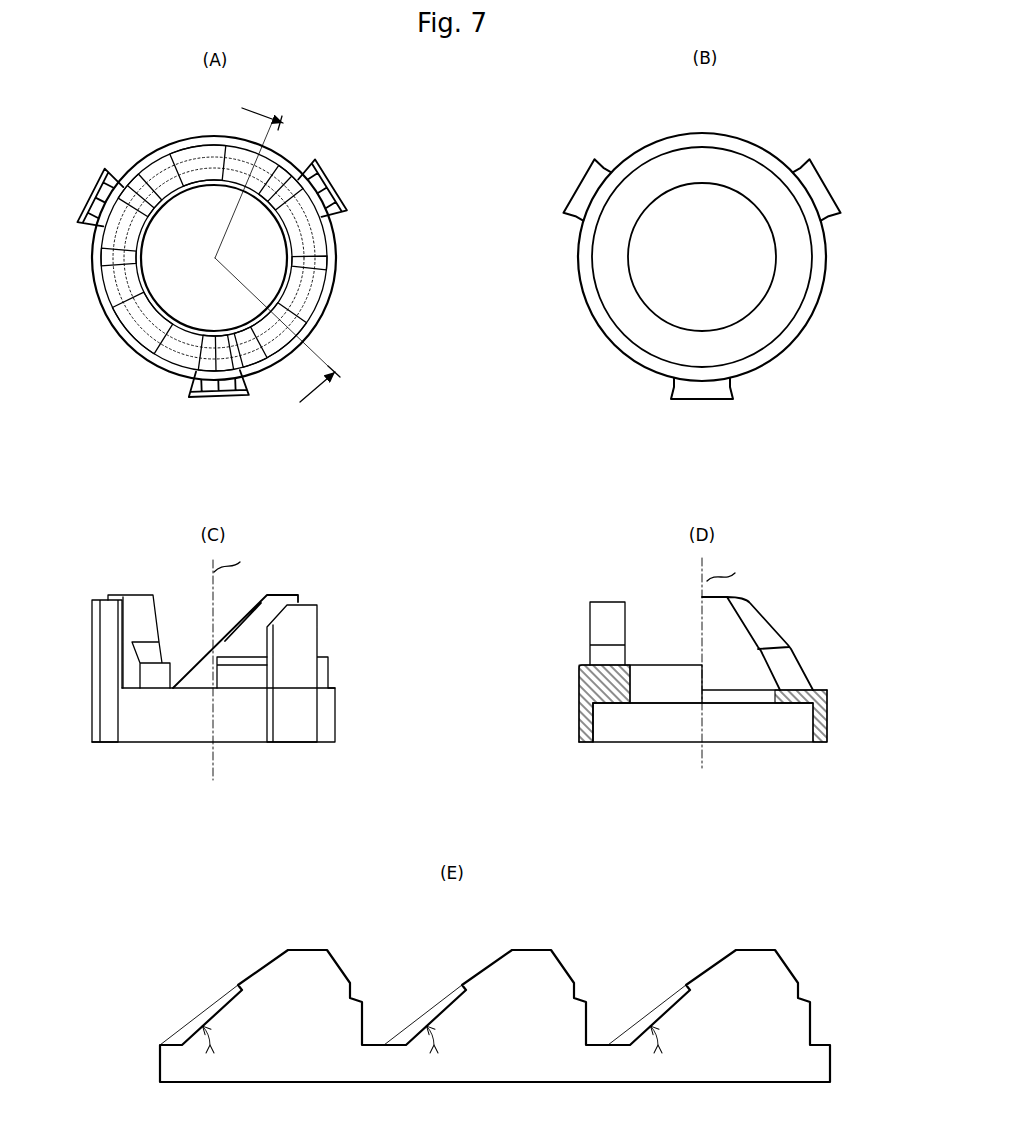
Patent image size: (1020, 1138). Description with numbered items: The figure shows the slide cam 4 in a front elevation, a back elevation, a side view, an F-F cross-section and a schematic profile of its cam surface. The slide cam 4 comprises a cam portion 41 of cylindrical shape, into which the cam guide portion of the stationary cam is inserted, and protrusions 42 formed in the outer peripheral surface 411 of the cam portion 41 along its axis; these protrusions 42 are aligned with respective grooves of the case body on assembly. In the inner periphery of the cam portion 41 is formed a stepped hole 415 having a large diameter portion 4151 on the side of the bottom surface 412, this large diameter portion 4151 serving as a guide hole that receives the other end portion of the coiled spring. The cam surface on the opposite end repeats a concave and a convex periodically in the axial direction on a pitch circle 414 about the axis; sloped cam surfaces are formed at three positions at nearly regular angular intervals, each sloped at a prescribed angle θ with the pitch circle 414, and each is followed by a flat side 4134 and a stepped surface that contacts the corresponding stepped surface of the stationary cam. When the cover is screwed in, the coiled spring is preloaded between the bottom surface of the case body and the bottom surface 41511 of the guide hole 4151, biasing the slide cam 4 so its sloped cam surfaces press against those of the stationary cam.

The slide cam 4 is at (347, 92).
The cam portion 41 is at (338, 237).
The protrusions 42 is at (88, 204).
The outer peripheral surface 411 is at (322, 315).
The bottom surface 412 is at (818, 257).
The pitch circle 414 is at (147, 182).
The stepped hole 415 is at (663, 682).
The flat side 4134 is at (308, 949).
The large diameter portion 4151 is at (645, 730).
The bottom surface of the guide hole 41511 is at (608, 705).